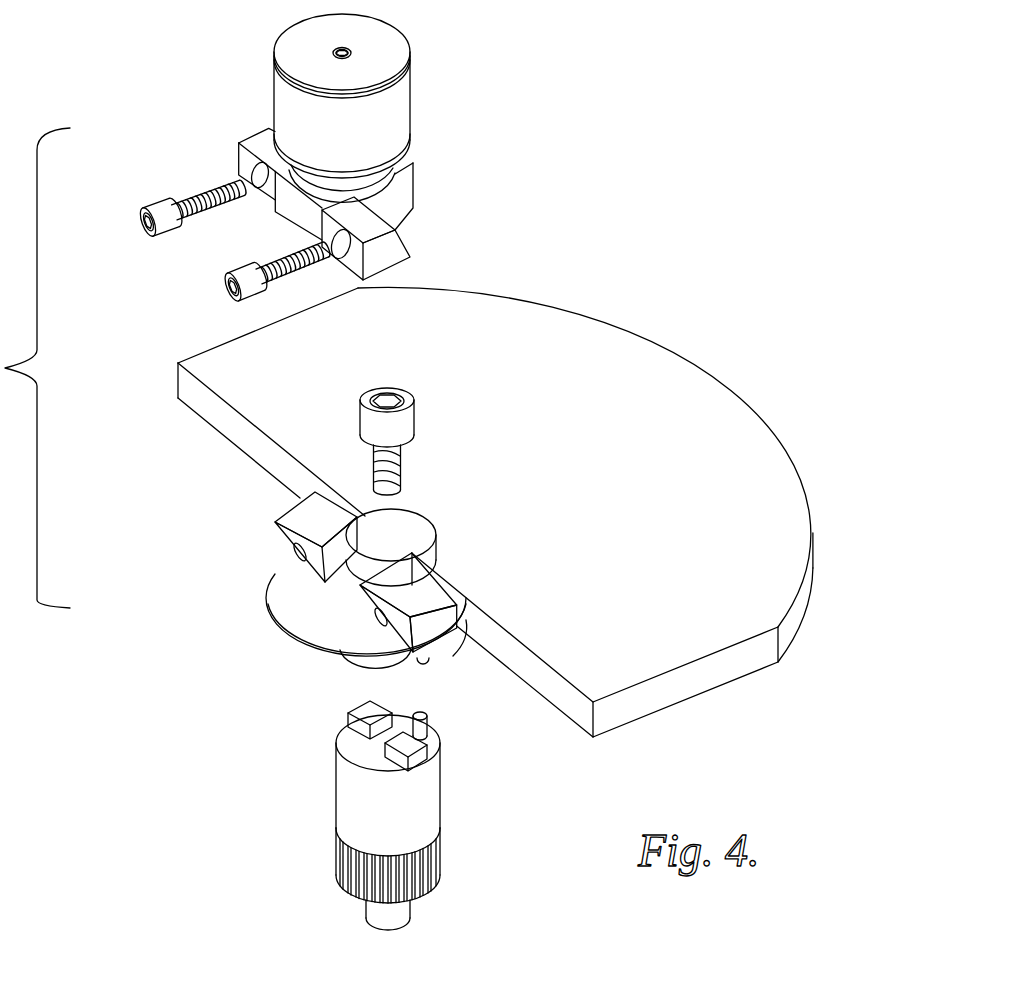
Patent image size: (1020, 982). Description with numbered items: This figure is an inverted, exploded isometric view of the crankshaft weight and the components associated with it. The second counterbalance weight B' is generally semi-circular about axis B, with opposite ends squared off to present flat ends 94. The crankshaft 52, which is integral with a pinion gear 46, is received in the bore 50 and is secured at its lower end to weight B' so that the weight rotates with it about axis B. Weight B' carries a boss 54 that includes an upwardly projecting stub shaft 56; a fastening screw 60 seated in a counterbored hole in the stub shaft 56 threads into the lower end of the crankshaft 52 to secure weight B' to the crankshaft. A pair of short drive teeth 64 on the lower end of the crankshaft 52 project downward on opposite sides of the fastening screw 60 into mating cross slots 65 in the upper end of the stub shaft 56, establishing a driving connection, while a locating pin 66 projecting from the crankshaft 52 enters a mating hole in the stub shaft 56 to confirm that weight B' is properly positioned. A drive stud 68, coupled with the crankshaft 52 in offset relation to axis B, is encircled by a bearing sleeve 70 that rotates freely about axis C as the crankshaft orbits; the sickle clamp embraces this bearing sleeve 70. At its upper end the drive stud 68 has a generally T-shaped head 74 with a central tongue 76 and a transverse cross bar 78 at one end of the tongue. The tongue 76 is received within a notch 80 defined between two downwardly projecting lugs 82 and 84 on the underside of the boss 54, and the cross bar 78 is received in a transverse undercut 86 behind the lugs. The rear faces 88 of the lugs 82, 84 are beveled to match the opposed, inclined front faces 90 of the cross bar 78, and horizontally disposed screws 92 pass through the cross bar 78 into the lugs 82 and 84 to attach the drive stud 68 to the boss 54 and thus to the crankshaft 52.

The pinion gear 46 is at (427, 870).
The bore 50 is at (383, 570).
The crankshaft 52 is at (401, 778).
The boss 54 is at (458, 660).
The stub shaft 56 is at (383, 670).
The fastening screw 60 is at (405, 425).
The drive teeth 64 is at (363, 715).
The cross slots 65 is at (417, 667).
The locating pin 66 is at (427, 723).
The drive stud 68 is at (383, 181).
The bearing sleeve 70 is at (402, 100).
The T-shaped head 74 is at (383, 233).
The central tongue 76 is at (403, 197).
The transverse cross bar 78 is at (383, 263).
The notch 80 is at (367, 598).
The lug 82 is at (277, 520).
The lug 84 is at (420, 600).
The transverse undercut 86 is at (292, 588).
The rear faces 88 is at (288, 546).
The inclined front faces 90 is at (407, 257).
The screws 92 is at (225, 286).
The flat ends 94 is at (205, 352).
The second counterbalance weight B' is at (471, 512).